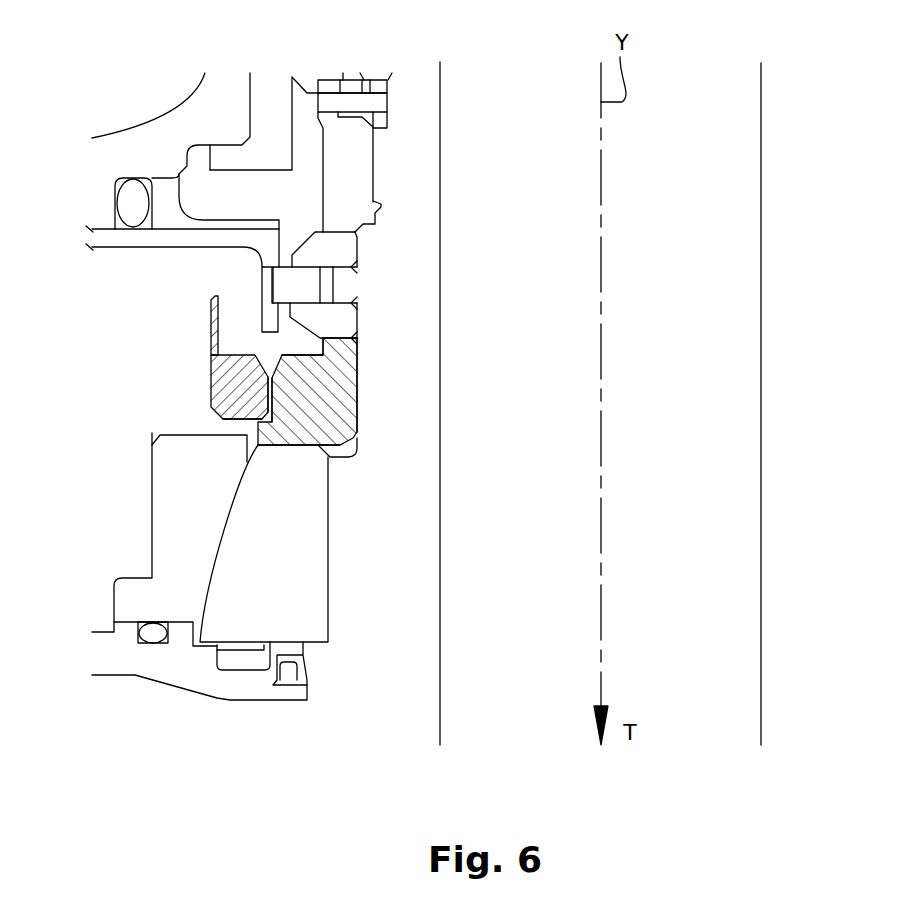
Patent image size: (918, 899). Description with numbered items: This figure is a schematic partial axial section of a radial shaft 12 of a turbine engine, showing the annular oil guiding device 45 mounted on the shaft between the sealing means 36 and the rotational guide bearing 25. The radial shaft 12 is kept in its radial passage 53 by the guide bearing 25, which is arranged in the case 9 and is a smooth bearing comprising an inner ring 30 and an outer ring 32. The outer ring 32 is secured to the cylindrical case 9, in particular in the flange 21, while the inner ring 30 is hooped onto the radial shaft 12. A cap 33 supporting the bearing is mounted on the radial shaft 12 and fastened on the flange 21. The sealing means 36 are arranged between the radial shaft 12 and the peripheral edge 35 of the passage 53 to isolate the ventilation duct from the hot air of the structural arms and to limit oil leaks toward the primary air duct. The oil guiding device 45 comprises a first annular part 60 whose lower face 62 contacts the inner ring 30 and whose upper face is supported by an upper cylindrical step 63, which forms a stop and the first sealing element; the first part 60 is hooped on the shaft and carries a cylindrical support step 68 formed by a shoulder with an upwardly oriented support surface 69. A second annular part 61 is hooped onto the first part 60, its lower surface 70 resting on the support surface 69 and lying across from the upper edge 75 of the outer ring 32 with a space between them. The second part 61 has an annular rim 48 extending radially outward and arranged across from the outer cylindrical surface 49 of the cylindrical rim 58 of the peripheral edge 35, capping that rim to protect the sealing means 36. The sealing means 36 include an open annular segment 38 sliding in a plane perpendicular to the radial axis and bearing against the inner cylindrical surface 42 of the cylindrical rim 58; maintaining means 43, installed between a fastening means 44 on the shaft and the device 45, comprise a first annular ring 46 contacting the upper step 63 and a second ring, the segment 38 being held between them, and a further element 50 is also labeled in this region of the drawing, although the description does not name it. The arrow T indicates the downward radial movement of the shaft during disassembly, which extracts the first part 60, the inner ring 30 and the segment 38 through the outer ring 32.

The case 9 is at (96, 110).
The radial shaft 12 is at (761, 125).
The flange 21 is at (108, 623).
The rotational guide bearing 25 is at (327, 622).
The inner ring 30 is at (300, 528).
The outer ring 32 is at (177, 545).
The cap 33 is at (246, 682).
The peripheral edge 35 is at (265, 220).
The sealing means 36 is at (388, 235).
The open annular segment 38 is at (280, 265).
The inner cylindrical surface 42 is at (302, 216).
The maintaining means 43 is at (361, 250).
The fastening means 44 is at (352, 148).
The annular oil guiding device 45 is at (348, 422).
The first annular ring 46 is at (350, 318).
The annular rim 48 is at (211, 323).
The outer cylindrical surface 49 is at (243, 261).
The spacer ring 50 is at (350, 277).
The radial passage 53 is at (310, 167).
The cylindrical rim 58 is at (262, 318).
The first annular part 60 is at (350, 402).
The second annular part 61 is at (235, 388).
The lower face 62 is at (297, 462).
The upper cylindrical step 63 is at (340, 346).
The cylindrical support step 68 is at (265, 412).
The support surface 69 is at (273, 402).
The lower surface 70 is at (229, 433).
The upper edge 75 is at (177, 424).